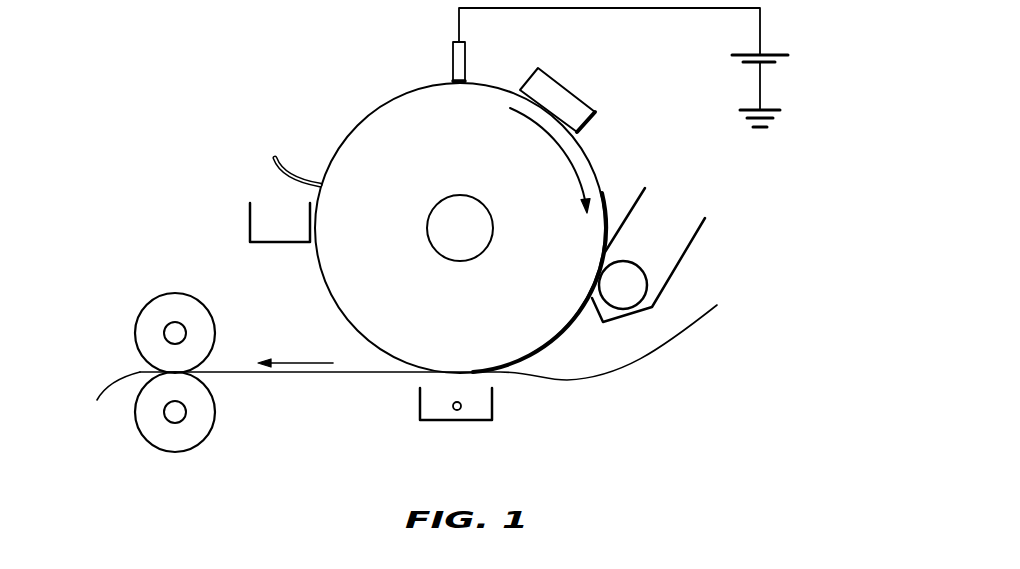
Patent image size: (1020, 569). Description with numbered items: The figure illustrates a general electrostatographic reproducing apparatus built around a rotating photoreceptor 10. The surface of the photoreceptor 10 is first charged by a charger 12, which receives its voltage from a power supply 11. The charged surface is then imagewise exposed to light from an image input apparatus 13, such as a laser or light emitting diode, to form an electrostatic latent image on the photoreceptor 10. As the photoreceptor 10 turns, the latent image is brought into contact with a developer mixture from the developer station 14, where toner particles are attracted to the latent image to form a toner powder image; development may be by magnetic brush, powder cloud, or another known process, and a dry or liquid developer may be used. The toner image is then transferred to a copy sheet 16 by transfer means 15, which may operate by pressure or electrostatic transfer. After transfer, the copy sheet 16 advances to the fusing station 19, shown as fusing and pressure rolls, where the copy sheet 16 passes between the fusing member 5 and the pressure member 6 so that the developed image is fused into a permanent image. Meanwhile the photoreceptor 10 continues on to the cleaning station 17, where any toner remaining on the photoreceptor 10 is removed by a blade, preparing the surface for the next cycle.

The fusing member 5 is at (152, 298).
The pressure member 6 is at (137, 412).
The photoreceptor 10 is at (590, 163).
The power supply 11 is at (760, 43).
The charger 12 is at (453, 72).
The image input apparatus 13 is at (572, 90).
The developer station 14 is at (661, 226).
The transfer means 15 is at (492, 398).
The copy sheet 16 is at (668, 343).
The cleaning station 17 is at (258, 176).
The fusing station 19 is at (195, 359).